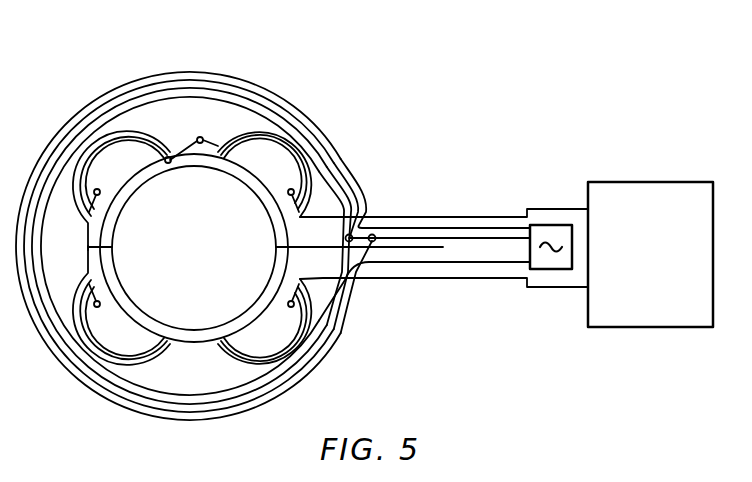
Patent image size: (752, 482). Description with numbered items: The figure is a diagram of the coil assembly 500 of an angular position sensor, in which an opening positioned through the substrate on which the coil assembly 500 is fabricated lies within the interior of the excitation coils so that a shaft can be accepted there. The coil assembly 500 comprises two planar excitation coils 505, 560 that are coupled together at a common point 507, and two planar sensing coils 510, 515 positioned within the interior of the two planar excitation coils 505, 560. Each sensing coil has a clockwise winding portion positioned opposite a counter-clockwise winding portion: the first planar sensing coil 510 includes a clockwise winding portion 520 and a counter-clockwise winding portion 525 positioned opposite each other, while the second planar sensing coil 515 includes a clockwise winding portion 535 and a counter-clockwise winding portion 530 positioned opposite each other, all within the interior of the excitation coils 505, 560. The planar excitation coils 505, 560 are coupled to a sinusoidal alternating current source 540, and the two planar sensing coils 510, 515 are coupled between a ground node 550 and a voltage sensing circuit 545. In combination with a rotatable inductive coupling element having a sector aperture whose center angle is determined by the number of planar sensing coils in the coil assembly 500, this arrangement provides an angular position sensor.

The coil assembly 500 is at (97, 28).
The planar excitation coil 505 is at (433, 216).
The common point 507 is at (488, 218).
The first planar sensing coil 510 is at (383, 208).
The second planar sensing coil 515 is at (392, 279).
The clockwise winding portion 520 is at (318, 152).
The counter-clockwise winding portion 525 is at (78, 352).
The counter-clockwise winding portion 530 is at (78, 149).
The clockwise winding portion 535 is at (313, 352).
The sinusoidal alternating current source 540 is at (551, 224).
The voltage sensing circuit 545 is at (650, 183).
The ground node 550 is at (434, 266).
The planar excitation coil 560 is at (498, 279).